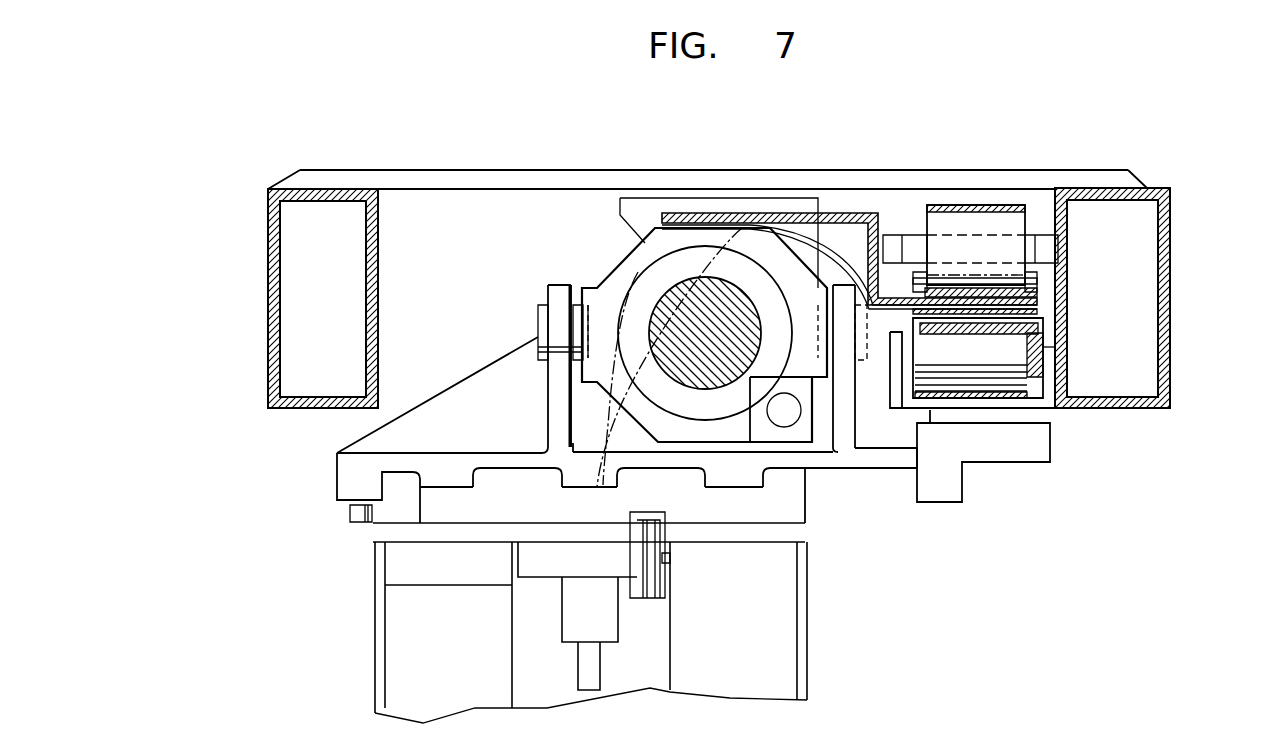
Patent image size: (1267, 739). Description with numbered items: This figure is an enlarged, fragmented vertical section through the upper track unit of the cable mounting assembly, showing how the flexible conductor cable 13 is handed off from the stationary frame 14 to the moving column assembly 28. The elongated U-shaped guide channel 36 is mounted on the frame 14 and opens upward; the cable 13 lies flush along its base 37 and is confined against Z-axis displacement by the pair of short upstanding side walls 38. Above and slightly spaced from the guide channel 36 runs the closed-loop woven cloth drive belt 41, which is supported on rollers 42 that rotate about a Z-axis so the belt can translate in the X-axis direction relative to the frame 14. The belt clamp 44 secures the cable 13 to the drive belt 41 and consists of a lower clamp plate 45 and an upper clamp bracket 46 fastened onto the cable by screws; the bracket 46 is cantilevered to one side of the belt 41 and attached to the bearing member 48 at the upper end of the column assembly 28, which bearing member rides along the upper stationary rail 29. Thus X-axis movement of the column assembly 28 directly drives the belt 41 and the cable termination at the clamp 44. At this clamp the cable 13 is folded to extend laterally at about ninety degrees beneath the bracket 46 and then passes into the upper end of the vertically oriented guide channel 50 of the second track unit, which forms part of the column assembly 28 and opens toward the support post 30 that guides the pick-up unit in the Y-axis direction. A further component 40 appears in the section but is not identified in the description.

The conductor cable 13 is at (616, 410).
The stationary frame 14 is at (1172, 278).
The column assembly 28 is at (326, 523).
The stationary rail 29 is at (692, 303).
The support post 30 is at (777, 628).
The guide channel 36 is at (930, 410).
The base 37 is at (981, 410).
The side walls 38 is at (897, 368).
The coil assembly 40 is at (1000, 337).
The drive belt 41 is at (957, 205).
The rollers 42 is at (908, 236).
The belt clamp 44 is at (945, 292).
The lower clamp plate 45 is at (1020, 318).
The upper clamp bracket 46 is at (866, 211).
The bearing member 48 is at (605, 300).
The guide channel 50 is at (373, 638).